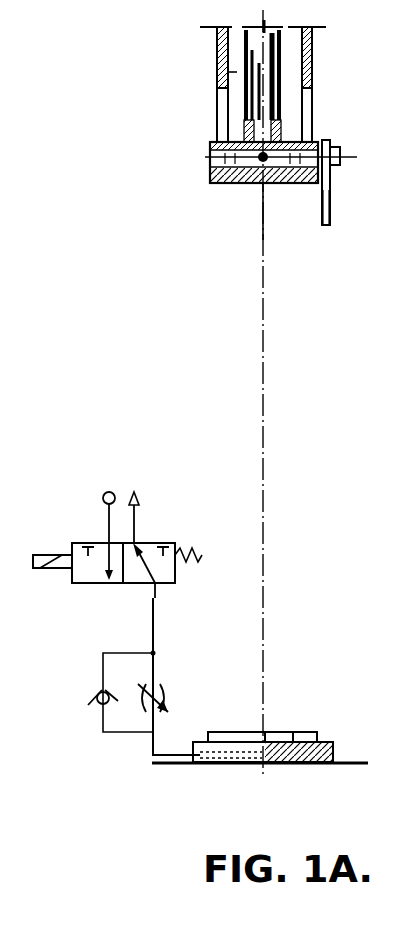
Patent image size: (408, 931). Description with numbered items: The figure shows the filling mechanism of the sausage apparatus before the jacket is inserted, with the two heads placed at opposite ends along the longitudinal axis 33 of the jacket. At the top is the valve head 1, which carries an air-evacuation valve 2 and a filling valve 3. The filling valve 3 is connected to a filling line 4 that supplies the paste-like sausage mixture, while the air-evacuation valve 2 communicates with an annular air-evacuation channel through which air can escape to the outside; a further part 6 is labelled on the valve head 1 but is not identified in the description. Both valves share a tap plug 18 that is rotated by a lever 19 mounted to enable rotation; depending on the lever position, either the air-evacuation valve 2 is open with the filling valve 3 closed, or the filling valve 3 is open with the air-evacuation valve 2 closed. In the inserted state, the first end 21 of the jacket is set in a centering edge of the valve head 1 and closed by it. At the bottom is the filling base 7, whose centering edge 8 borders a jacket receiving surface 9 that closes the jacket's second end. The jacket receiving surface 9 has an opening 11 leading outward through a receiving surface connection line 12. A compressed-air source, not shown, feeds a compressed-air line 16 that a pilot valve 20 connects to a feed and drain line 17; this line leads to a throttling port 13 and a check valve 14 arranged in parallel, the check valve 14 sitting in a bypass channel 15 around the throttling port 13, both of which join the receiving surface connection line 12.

The valve head 1 is at (250, 136).
The air-evacuation valve 2 is at (213, 160).
The filling valve 3 is at (261, 160).
The filling line 4 is at (312, 83).
The guide tube 6 is at (217, 73).
The filling base 7 is at (270, 742).
The centering edge 8 is at (317, 730).
The jacket receiving surface 9 is at (293, 732).
The opening 11 is at (265, 733).
The receiving surface connection line 12 is at (215, 762).
The throttling port 13 is at (163, 690).
The check valve 14 is at (92, 698).
The bypass channel 15 is at (103, 717).
The compressed-air line 16 is at (108, 492).
The feed and drain line 17 is at (155, 630).
The tap plug 18 is at (316, 141).
The lever 19 is at (330, 203).
The pilot valve 20 is at (158, 520).
The first end 21 is at (390, 265).
The longitudinal axis 33 is at (263, 440).